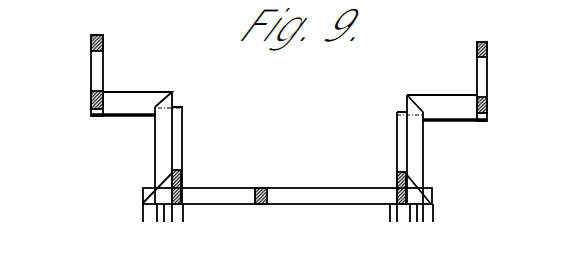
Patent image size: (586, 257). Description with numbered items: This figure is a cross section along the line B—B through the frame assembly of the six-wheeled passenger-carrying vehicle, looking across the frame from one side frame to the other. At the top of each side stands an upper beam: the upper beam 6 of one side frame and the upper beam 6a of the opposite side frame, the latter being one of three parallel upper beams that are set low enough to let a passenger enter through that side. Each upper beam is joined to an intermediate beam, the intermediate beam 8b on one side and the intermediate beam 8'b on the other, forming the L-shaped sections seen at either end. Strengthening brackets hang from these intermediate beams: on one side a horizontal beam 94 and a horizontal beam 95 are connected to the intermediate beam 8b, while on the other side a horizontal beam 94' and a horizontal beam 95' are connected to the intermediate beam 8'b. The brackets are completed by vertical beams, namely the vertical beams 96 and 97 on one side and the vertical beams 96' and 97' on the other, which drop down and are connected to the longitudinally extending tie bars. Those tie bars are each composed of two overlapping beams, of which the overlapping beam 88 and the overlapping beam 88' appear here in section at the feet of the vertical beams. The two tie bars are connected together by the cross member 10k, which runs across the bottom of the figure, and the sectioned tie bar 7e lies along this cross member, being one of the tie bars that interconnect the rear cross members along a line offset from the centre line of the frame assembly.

The upper beam 6 is at (104, 41).
The upper beam 6a is at (488, 46).
The intermediate beam 8b is at (90, 99).
The intermediate beam 8'b is at (480, 117).
The horizontal beam 94 is at (146, 74).
The horizontal beam 94' is at (434, 80).
The horizontal beam 95 is at (101, 136).
The horizontal beam 95' is at (477, 147).
The vertical beam 96 is at (135, 148).
The vertical beam 96' is at (449, 149).
The vertical beam 97 is at (115, 188).
The vertical beam 97' is at (458, 201).
The overlapping beam 88 is at (211, 162).
The overlapping beam 88' is at (358, 208).
The cross member 10k is at (313, 200).
The tie bar 7e is at (260, 206).